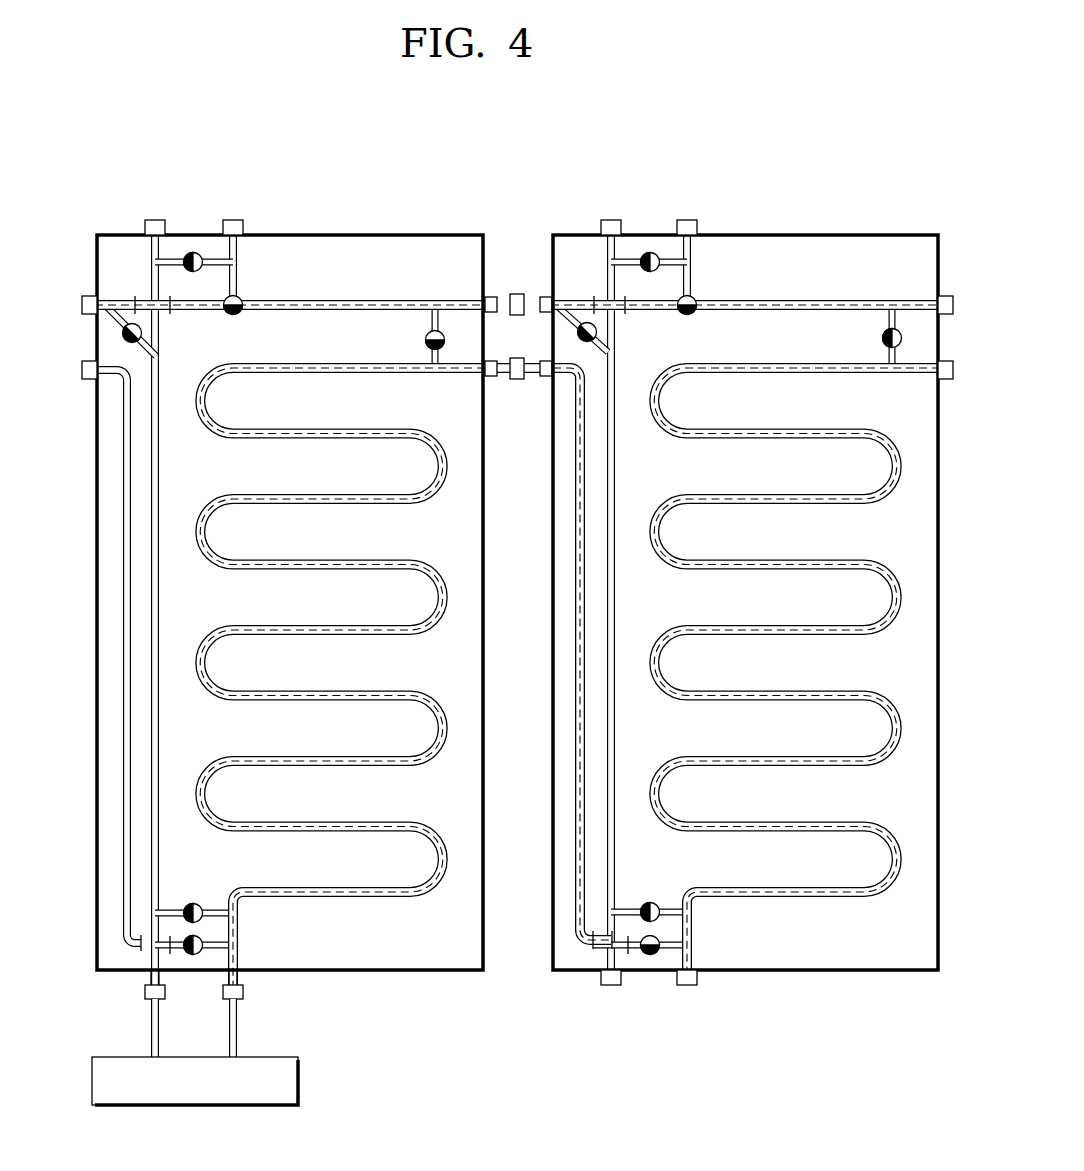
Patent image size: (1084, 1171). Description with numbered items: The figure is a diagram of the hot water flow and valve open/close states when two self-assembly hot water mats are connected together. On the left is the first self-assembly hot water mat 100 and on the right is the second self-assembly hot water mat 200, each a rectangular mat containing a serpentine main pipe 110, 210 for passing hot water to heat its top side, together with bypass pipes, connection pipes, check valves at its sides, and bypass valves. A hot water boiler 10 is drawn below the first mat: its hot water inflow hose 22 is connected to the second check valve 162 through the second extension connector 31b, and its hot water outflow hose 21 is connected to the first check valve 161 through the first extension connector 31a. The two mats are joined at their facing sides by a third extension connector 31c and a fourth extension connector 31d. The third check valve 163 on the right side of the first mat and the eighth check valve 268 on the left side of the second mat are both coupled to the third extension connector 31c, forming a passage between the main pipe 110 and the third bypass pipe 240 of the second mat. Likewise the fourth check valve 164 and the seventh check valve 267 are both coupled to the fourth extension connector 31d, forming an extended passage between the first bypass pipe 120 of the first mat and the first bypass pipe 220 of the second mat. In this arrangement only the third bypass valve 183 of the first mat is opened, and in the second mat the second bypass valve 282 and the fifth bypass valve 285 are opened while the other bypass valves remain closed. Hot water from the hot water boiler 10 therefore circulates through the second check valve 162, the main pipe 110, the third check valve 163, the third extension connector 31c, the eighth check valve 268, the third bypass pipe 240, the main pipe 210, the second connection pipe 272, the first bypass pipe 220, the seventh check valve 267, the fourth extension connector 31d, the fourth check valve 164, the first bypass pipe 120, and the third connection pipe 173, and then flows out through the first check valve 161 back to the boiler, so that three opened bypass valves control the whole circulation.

The hot water boiler 10 is at (300, 1081).
The hot water outflow hose 21 is at (150, 1038).
The hot water inflow hose 22 is at (240, 1038).
The first extension connector 31a is at (148, 993).
The second extension connector 31b is at (243, 993).
The third extension connector 31c is at (519, 381).
The fourth extension connector 31d is at (519, 294).
The self-assembly hot water mat 100 is at (403, 172).
The main pipe 110 is at (386, 692).
The first bypass pipe 120 is at (328, 300).
The first check valve 161 is at (150, 978).
The second check valve 162 is at (240, 978).
The third check valve 163 is at (487, 377).
The fourth check valve 164 is at (487, 297).
The third connection pipe 173 is at (108, 306).
The third bypass valve 183 is at (125, 337).
The second self-assembly hot water mat 200 is at (857, 172).
The main pipe 210 is at (840, 692).
The first bypass pipe 220 is at (786, 300).
The third bypass pipe 240 is at (575, 851).
The seventh check valve 267 is at (547, 298).
The eighth check valve 268 is at (549, 361).
The second connection pipe 272 is at (885, 356).
The second bypass valve 282 is at (884, 340).
The fifth bypass valve 285 is at (651, 957).